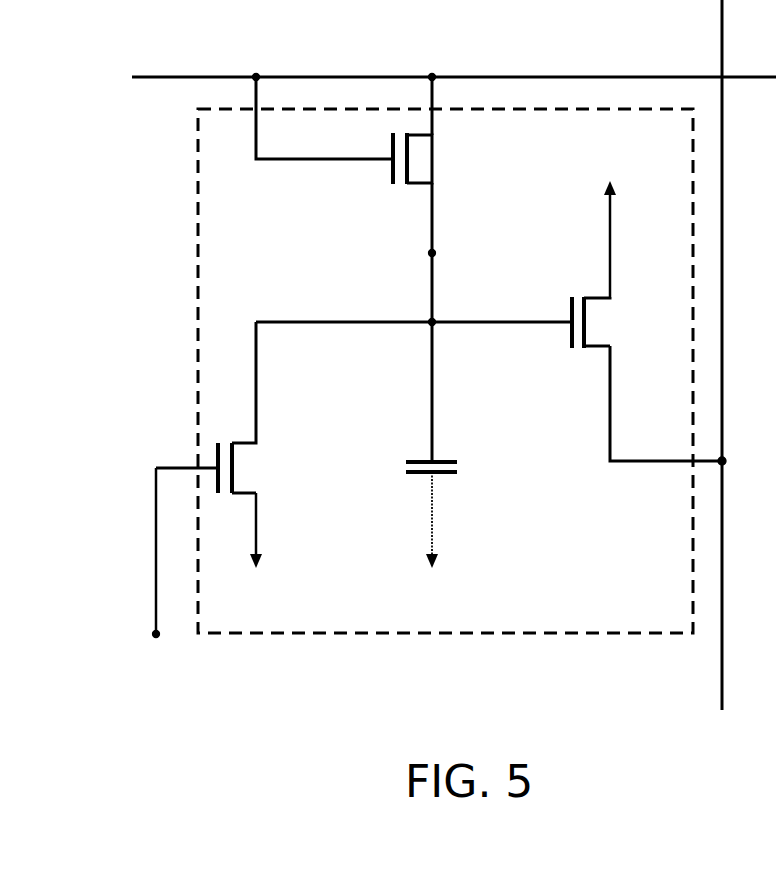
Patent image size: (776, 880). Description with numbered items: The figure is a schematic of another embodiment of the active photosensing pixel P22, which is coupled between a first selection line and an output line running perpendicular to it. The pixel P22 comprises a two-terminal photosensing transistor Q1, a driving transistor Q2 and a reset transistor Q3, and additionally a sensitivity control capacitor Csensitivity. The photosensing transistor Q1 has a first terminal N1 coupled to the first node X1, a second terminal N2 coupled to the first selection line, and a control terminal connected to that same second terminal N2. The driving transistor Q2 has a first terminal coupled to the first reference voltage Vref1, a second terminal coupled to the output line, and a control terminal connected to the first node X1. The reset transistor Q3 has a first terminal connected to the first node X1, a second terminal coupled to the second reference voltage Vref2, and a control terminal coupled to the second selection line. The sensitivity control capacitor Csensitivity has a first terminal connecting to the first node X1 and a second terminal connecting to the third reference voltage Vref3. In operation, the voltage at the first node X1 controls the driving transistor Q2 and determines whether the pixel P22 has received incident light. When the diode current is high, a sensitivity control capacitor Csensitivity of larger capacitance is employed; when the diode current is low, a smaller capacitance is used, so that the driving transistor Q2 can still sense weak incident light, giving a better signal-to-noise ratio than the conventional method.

The two-terminal photosensing transistor Q1 is at (425, 160).
The driving transistor Q2 is at (600, 322).
The reset transistor Q3 is at (248, 468).
The first terminal N1 is at (436, 253).
The second terminal N2 is at (432, 76).
The first node X1 is at (430, 326).
The active photosensing pixel P22 is at (447, 634).
The sensitivity control capacitor Csensitivity is at (457, 467).
The first reference voltage Vref1 is at (611, 219).
The second reference voltage Vref2 is at (263, 554).
The third reference voltage Vref3 is at (438, 543).